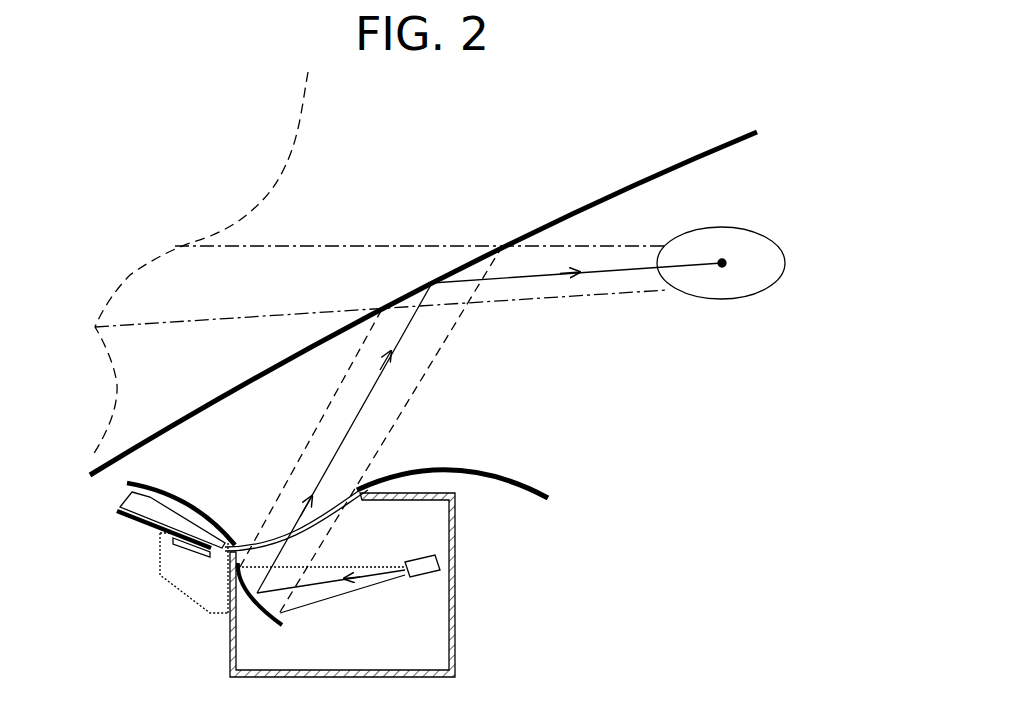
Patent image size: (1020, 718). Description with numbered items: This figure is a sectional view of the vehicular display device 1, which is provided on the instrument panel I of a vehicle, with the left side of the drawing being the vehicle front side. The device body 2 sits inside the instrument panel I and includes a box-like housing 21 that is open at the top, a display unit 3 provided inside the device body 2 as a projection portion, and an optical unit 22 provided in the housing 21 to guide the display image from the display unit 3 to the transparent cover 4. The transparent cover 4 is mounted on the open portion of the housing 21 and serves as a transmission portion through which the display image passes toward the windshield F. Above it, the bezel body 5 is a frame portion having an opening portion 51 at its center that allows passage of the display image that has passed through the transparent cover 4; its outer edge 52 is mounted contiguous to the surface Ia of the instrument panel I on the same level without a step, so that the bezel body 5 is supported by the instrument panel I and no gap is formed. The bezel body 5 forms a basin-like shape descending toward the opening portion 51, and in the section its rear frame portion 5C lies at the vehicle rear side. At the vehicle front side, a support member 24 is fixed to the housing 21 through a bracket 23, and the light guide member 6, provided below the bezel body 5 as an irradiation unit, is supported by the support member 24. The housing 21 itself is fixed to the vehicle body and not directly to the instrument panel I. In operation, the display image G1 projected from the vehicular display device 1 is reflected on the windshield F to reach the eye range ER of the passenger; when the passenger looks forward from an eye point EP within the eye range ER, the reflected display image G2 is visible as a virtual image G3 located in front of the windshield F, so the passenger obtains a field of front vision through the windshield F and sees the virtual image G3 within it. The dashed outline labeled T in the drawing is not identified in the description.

The vehicular display device 1 is at (246, 461).
The device body 2 is at (402, 585).
The housing 21 is at (457, 640).
The optical unit 22 is at (258, 612).
The bracket 23 is at (178, 583).
The support member 24 is at (140, 525).
The display unit 3 is at (441, 563).
The transparent cover 4 is at (275, 538).
The bezel body 5 is at (160, 483).
The opening portion 51 is at (328, 488).
The outer edge 52 is at (460, 472).
The rear frame portion 5C is at (407, 468).
The light guide member 6 is at (125, 495).
The windshield F is at (702, 152).
The eye point EP is at (722, 258).
The eye range ER is at (757, 232).
The display image G1 is at (377, 382).
The reflected display image G2 is at (543, 278).
The virtual image G3 is at (130, 277).
The instrument panel I is at (547, 497).
The surface of the instrument panel Ia is at (505, 478).
The roof line T is at (308, 71).